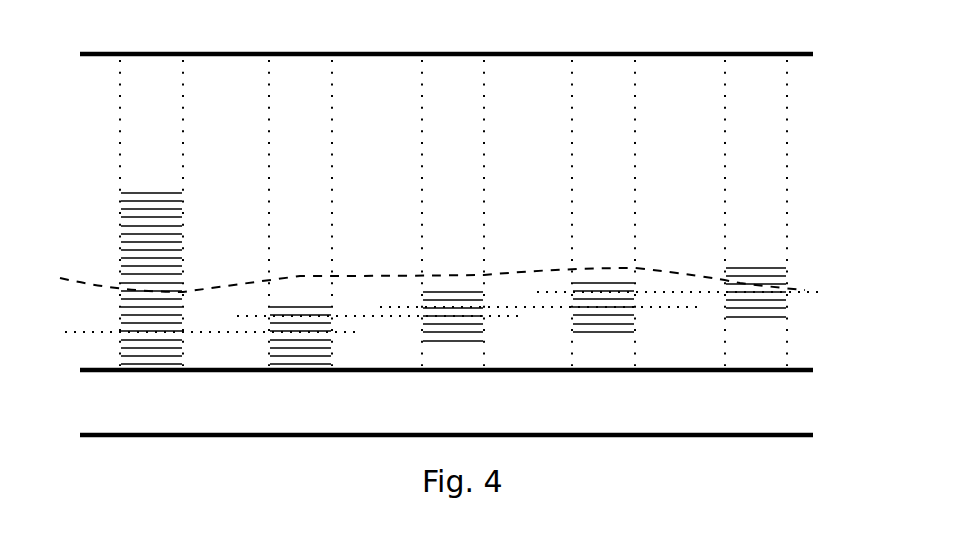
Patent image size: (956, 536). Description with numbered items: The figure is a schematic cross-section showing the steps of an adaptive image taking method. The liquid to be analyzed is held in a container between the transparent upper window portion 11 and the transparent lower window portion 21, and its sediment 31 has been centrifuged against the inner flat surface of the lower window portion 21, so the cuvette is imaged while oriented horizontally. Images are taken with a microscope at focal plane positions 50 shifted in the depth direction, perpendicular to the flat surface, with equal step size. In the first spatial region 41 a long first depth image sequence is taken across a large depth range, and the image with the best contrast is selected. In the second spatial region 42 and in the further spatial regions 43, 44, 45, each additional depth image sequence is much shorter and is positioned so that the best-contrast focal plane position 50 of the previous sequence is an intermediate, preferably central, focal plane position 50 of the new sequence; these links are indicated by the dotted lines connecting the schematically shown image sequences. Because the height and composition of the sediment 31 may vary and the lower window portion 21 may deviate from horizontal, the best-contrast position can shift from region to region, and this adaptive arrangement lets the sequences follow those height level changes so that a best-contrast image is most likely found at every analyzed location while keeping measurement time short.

The transparent upper window portion 11 is at (793, 38).
The transparent lower window portion 21 is at (797, 420).
The sediment 31 is at (664, 275).
The first spatial region 41 is at (115, 213).
The second spatial region 42 is at (269, 133).
The spatial region 43 is at (422, 146).
The spatial region 44 is at (572, 146).
The spatial region 45 is at (725, 133).
The focal plane position 50 is at (126, 242).